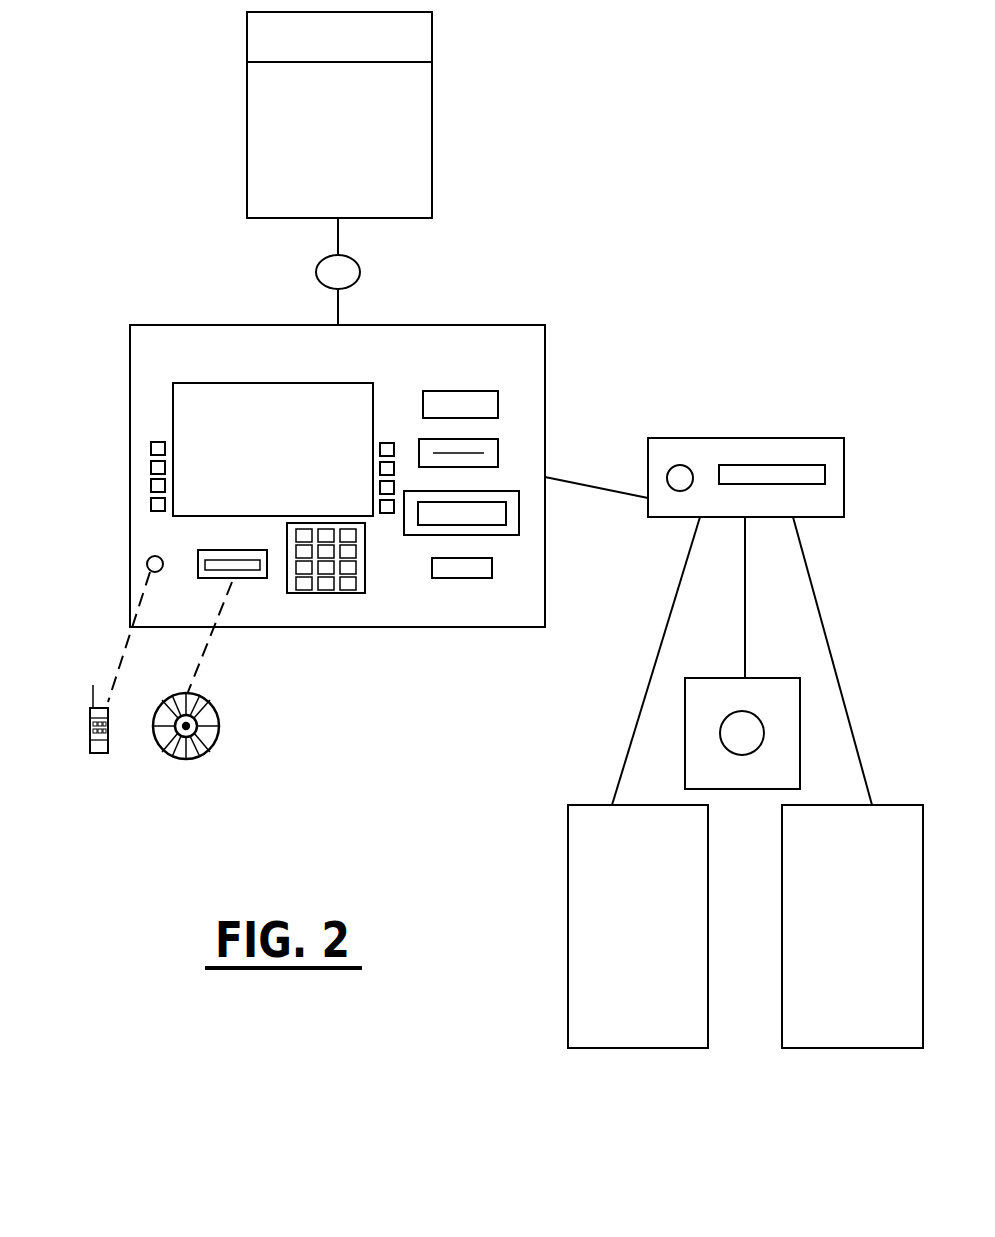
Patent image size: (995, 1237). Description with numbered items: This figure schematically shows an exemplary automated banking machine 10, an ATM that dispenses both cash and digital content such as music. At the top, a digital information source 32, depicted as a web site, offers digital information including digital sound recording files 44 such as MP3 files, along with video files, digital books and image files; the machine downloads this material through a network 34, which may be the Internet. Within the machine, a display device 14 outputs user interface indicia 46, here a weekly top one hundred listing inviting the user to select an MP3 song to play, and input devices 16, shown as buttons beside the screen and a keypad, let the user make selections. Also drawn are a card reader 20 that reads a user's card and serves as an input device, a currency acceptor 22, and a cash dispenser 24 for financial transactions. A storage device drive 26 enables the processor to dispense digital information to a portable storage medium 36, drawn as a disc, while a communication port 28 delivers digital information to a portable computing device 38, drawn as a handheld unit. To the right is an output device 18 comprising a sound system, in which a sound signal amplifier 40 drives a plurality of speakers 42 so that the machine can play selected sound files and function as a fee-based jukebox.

The automated banking machine 10 is at (495, 325).
The display device 14 is at (195, 383).
The input device 16 is at (151, 447).
The output device 18 is at (704, 699).
The card reader 20 is at (497, 449).
The currency acceptor 22 is at (490, 575).
The cash dispenser 24 is at (519, 535).
The storage device drive 26 is at (240, 578).
The communication port 28 is at (147, 562).
The digital information source 32 is at (428, 48).
The network 34 is at (360, 275).
The portable storage medium 36 is at (219, 722).
The portable computing device 38 is at (105, 753).
The sound signal amplifier 40 is at (782, 438).
The speakers 42 is at (752, 678).
The digital sound recording files 44 is at (407, 105).
The user interface indicia 46 is at (300, 402).